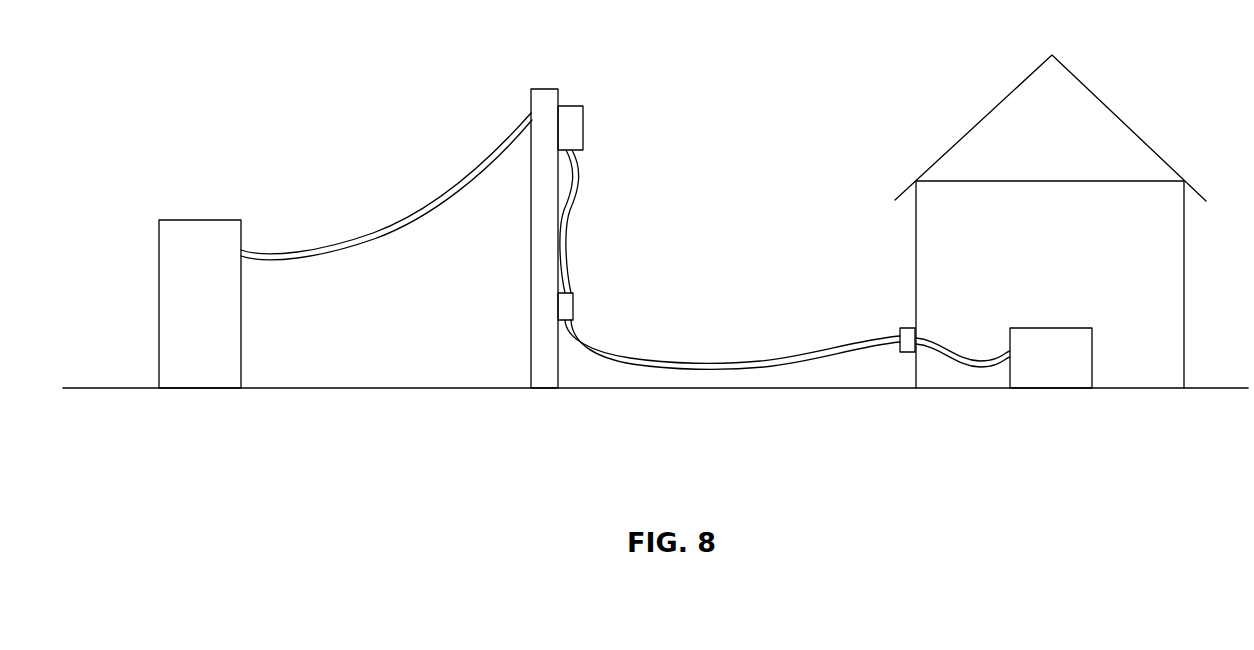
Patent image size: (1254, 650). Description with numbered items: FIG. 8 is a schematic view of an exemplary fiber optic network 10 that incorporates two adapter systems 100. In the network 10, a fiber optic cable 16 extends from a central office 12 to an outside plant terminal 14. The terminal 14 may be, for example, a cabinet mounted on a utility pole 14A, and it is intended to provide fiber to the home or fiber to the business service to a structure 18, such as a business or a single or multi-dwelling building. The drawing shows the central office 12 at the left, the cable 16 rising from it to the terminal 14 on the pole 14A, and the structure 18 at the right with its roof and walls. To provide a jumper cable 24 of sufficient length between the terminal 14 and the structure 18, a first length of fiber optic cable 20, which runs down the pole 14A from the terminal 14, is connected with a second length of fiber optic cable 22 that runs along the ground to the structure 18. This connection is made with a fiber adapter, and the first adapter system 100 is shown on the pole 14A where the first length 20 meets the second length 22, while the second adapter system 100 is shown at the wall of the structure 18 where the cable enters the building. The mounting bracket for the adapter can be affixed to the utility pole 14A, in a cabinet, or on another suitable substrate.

The fiber optic network 10 is at (201, 61).
The central office 12 is at (202, 236).
The outside plant terminal 14 is at (574, 130).
The utility pole 14A is at (540, 355).
The fiber optic cable 16 is at (374, 236).
The structure 18 is at (1088, 107).
The first length of fiber optic cable 20 is at (572, 217).
The second length of fiber optic cable 22 is at (768, 360).
The jumper cable 24 is at (664, 322).
The adapter system 100 is at (574, 307).